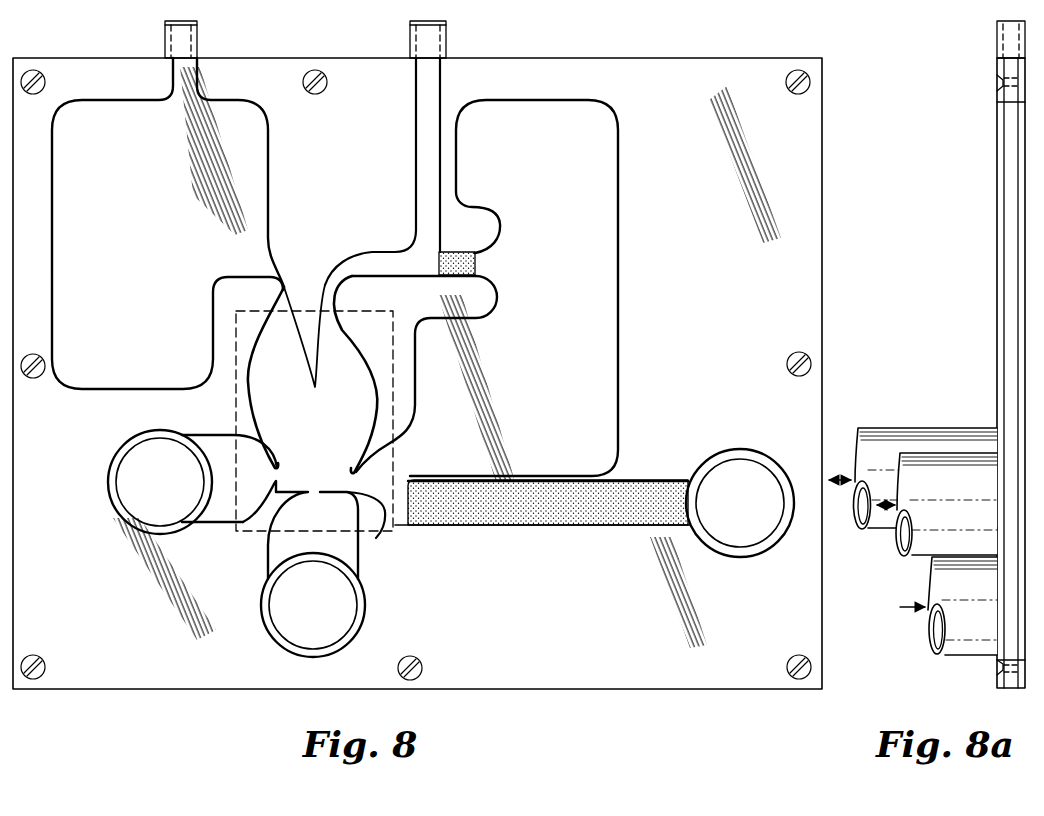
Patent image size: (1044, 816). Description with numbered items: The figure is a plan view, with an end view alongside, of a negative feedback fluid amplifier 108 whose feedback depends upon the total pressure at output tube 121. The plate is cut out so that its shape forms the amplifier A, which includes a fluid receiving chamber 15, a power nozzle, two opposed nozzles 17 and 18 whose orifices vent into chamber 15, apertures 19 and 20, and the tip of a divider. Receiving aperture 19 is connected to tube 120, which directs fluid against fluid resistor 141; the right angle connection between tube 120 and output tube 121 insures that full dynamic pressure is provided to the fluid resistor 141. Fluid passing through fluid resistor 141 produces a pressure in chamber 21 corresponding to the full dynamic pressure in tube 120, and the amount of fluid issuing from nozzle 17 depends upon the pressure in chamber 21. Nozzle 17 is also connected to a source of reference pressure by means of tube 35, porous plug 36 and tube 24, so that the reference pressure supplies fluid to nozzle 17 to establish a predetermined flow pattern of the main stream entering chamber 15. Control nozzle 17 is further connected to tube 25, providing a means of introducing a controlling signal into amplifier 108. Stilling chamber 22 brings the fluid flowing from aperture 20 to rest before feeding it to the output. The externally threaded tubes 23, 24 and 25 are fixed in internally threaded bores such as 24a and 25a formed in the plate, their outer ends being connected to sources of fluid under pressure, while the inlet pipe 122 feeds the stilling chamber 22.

In FIG. 8, the negative feedback fluid amplifier 108 is at (783, 248).
In FIG. 8A, the negative feedback fluid amplifier 108 is at (992, 303).
In FIG. 8, the inlet pipe to chamber 22 122 is at (192, 75).
In FIG. 8, the output tube 121 is at (435, 95).
In FIG. 8, the tube 120 is at (372, 259).
In FIG. 8, the fluid resistor 141 is at (476, 264).
In FIG. 8, the stilling chamber 22 is at (141, 254).
In FIG. 8, the chamber 21 is at (543, 296).
In FIG. 8, the aperture 20 is at (287, 318).
In FIG. 8, the receiving aperture 19 is at (336, 318).
In FIG. 8, the fluid receiving chamber 15 is at (320, 438).
In FIG. 8, the amplifier A is at (401, 445).
In FIG. 8, the tube 25 is at (148, 445).
In FIG. 8A, the tube 25 is at (889, 469).
In FIG. 8, the internally threaded bore 25a is at (136, 520).
In FIG. 8, the nozzle 18 is at (247, 516).
In FIG. 8, the control nozzle 17 is at (386, 514).
In FIG. 8, the tube 23 is at (352, 620).
In FIG. 8A, the tube 23 is at (982, 614).
In FIG. 8, the porous plug 36 is at (640, 478).
In FIG. 8, the tube 35 is at (531, 527).
In FIG. 8, the tube 24 is at (753, 472).
In FIG. 8A, the tube 24 is at (954, 505).
In FIG. 8, the internally threaded bore 24a is at (745, 549).